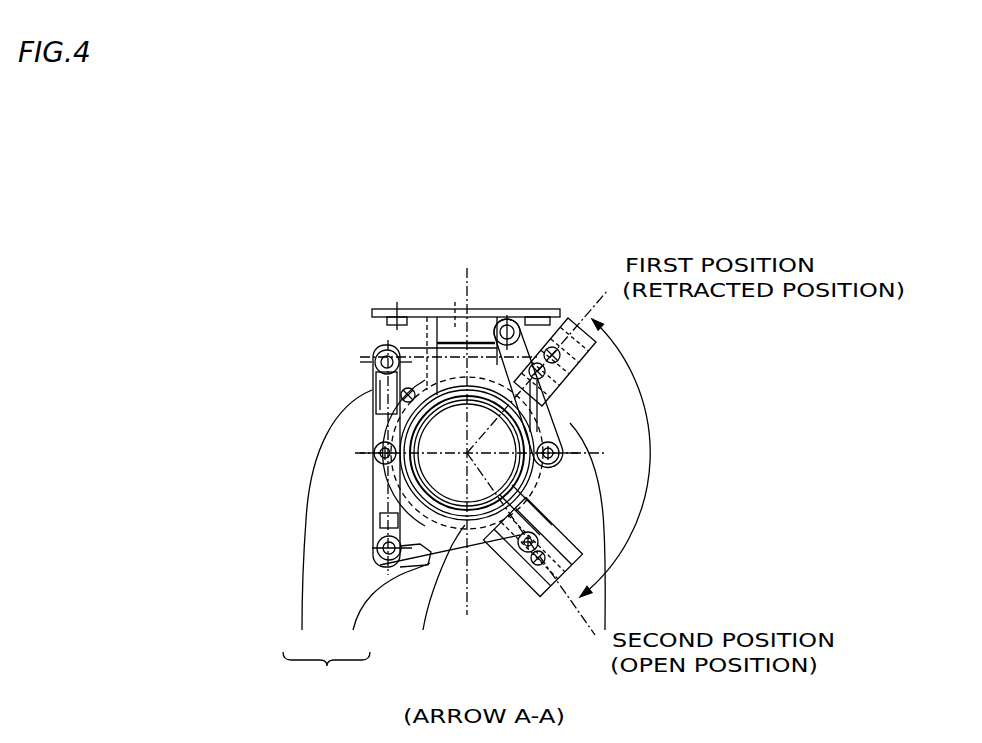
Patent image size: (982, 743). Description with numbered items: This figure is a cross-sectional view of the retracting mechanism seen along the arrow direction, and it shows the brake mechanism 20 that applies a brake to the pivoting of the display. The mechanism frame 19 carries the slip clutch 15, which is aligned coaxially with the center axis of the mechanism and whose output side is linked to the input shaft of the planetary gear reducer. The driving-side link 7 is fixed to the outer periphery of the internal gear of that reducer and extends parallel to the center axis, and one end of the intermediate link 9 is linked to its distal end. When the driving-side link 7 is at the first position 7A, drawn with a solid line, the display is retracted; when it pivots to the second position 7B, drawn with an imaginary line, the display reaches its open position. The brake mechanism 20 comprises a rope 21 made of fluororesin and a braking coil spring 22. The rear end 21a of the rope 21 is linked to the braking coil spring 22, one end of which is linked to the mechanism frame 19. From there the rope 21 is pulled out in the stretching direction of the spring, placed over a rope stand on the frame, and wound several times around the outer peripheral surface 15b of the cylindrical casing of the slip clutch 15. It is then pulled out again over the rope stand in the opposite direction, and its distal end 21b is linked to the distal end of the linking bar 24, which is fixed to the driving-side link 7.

The driving-side link 7 is at (568, 375).
The first position 7A is at (566, 388).
The second position 7B is at (500, 572).
The intermediate link 9 is at (578, 358).
The slip clutch 15 is at (452, 412).
The outer peripheral surface 15b is at (440, 588).
The mechanism frame 19 is at (372, 342).
The brake mechanism 20 is at (326, 670).
The rope 21 is at (386, 597).
The rear end 21a is at (373, 413).
The distal end 21b is at (558, 465).
The braking coil spring 22 is at (352, 498).
The linking bar 24 is at (508, 330).